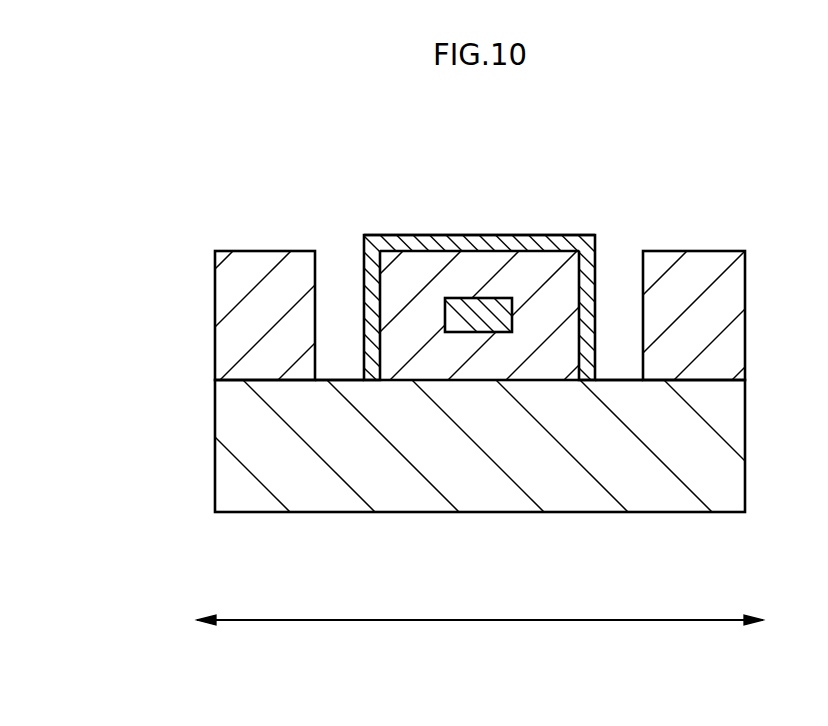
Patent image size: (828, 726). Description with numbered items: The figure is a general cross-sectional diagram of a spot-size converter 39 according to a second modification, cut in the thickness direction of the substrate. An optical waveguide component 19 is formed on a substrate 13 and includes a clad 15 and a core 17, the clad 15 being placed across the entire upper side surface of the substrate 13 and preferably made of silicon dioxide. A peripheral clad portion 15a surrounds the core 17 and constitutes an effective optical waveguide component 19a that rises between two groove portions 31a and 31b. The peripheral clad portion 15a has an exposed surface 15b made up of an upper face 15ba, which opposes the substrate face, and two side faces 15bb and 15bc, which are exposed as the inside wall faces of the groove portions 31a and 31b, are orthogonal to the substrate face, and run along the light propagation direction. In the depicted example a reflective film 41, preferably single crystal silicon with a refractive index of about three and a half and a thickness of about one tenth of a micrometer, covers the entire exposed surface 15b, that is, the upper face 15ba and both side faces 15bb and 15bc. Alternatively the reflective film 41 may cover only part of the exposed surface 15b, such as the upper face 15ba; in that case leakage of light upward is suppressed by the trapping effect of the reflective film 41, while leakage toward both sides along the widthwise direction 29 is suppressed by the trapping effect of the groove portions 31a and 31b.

The substrate 13 is at (228, 442).
The clad 15 is at (228, 358).
The peripheral clad portion 15a is at (397, 303).
The exposed surface 15b is at (518, 360).
The upper face 15ba is at (546, 245).
The side face 15bb is at (366, 283).
The side face 15bc is at (581, 290).
The core 17 is at (456, 322).
The optical waveguide component 19 is at (66, 280).
The effective optical waveguide component 19a is at (134, 253).
The widthwise direction 29 is at (259, 622).
The groove portion 31a is at (333, 257).
The groove portion 31b is at (614, 262).
The spot-size converter 39 is at (728, 207).
The reflective film 41 is at (449, 235).